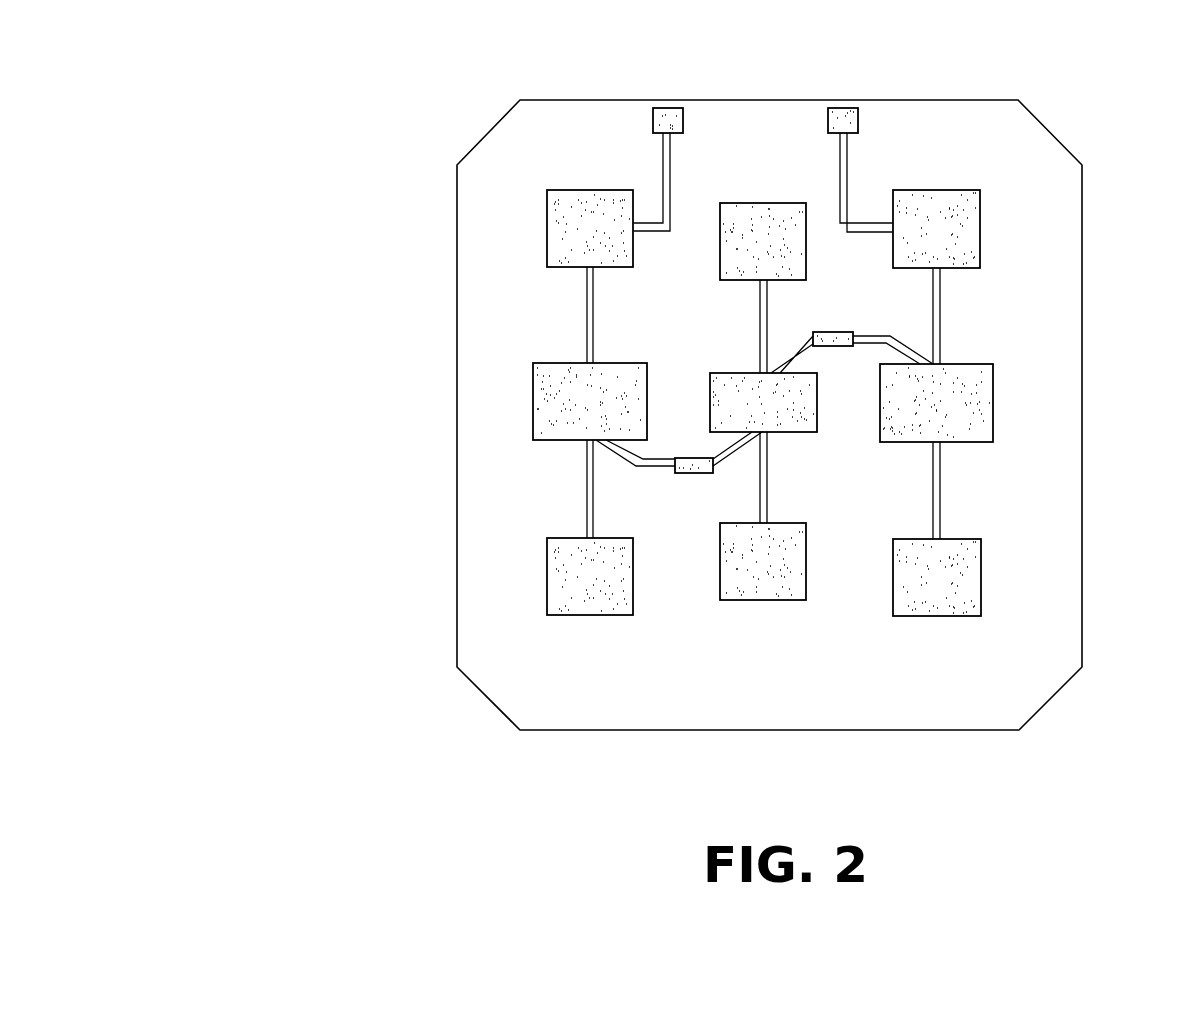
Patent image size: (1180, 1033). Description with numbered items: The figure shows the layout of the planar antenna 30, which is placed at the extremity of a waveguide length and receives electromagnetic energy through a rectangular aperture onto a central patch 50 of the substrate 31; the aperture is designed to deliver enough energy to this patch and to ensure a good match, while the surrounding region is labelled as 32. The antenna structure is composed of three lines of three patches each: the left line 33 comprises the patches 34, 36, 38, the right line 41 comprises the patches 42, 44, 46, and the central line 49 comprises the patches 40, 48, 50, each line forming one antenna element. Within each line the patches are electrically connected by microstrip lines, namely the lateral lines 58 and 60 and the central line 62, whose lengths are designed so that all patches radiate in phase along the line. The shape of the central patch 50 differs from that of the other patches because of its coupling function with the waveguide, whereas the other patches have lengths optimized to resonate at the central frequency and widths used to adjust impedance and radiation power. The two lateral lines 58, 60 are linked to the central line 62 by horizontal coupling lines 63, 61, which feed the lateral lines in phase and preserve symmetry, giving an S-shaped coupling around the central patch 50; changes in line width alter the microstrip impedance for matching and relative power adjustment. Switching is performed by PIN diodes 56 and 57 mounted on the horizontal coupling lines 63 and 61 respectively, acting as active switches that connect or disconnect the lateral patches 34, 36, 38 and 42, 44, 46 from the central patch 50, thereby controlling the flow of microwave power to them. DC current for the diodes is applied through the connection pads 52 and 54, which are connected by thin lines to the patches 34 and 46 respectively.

The planar antenna 30 is at (278, 151).
The substrate 31 is at (1028, 655).
The substrate surface 32 is at (487, 388).
The left line 33 is at (536, 652).
The patch 34 is at (547, 202).
The patch 36 is at (553, 446).
The patch 38 is at (547, 573).
The patch 40 is at (762, 601).
The right line 41 is at (949, 660).
The patch 42 is at (982, 571).
The patch 44 is at (994, 400).
The patch 46 is at (935, 190).
The patch 48 is at (765, 203).
The central line 49 is at (733, 655).
The central patch 50 is at (817, 413).
The connection pad 52 is at (655, 114).
The connection pad 54 is at (845, 107).
The PIN diode 56 is at (685, 474).
The PIN diode 57 is at (852, 334).
The microstrip line 58 is at (587, 297).
The microstrip line 60 is at (940, 306).
The horizontal coupling line 61 is at (797, 347).
The central line 62 is at (758, 333).
The horizontal coupling line 63 is at (620, 465).